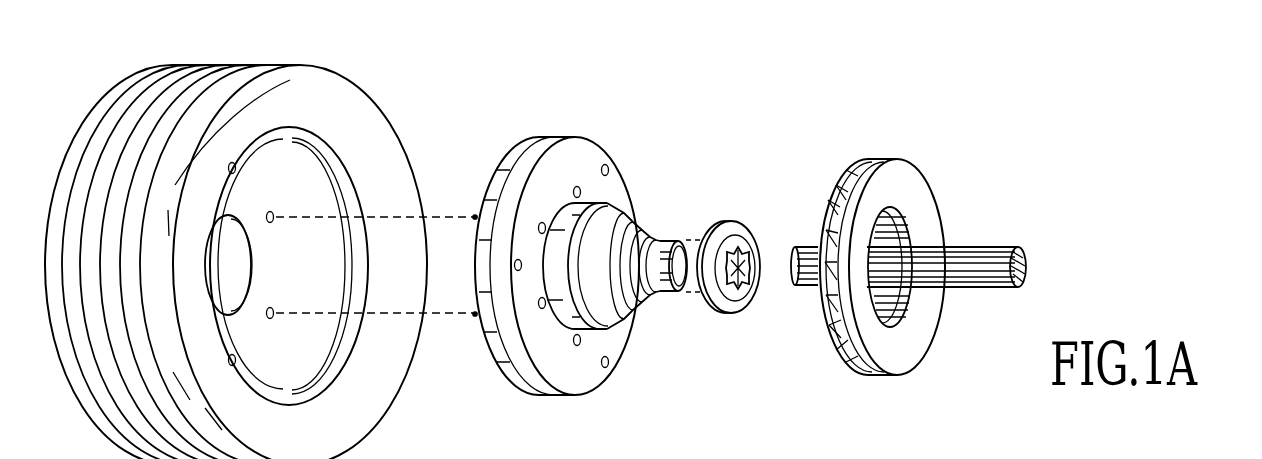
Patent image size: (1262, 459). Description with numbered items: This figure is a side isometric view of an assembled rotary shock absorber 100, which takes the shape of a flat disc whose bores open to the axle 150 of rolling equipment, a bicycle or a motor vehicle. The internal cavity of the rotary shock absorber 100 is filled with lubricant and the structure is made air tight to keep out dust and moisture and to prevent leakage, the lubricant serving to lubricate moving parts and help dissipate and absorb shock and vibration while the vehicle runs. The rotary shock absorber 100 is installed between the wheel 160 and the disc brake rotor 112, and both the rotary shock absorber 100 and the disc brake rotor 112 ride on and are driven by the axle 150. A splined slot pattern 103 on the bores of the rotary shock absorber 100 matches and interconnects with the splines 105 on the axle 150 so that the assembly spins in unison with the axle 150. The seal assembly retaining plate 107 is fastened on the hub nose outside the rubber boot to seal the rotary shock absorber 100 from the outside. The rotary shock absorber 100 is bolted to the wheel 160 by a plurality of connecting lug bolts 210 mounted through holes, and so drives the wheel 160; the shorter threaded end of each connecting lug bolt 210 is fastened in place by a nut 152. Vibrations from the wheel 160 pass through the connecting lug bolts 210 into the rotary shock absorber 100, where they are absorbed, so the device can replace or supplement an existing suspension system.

The rotary shock absorber 100 is at (624, 393).
The splined slot pattern 103 is at (748, 258).
The splines 105 is at (792, 245).
The seal assembly retaining plate 107 is at (740, 306).
The disc brake rotor 112 is at (899, 176).
The axle 150 is at (993, 247).
The nut 152 is at (609, 167).
The wheel 160 is at (386, 136).
The connecting lug bolts 210 is at (476, 318).